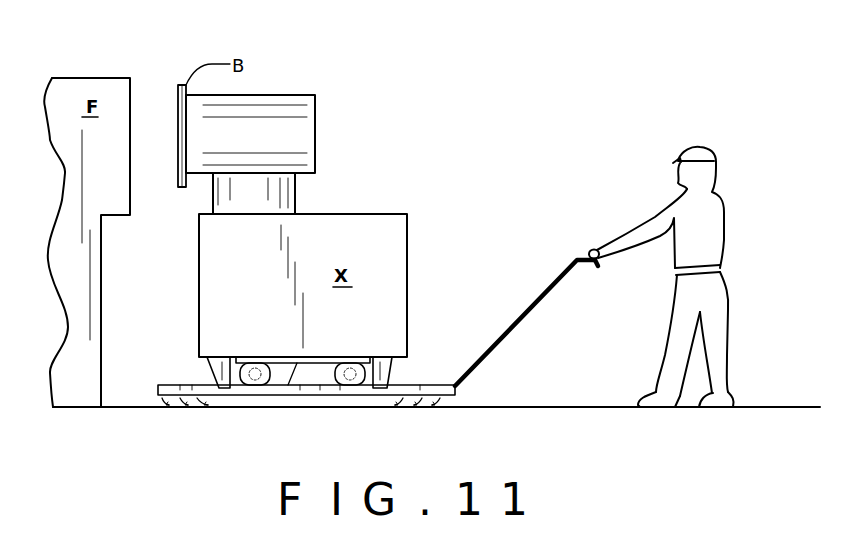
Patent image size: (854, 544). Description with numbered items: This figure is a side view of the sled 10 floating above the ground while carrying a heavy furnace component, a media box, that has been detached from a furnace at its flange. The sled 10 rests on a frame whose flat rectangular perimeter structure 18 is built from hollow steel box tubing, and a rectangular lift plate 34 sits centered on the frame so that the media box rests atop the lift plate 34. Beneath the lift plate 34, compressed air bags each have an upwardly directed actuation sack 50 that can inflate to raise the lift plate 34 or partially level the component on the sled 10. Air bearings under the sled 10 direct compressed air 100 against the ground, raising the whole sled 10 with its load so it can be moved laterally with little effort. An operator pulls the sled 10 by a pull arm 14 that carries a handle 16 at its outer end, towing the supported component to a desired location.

The sled 10 is at (387, 322).
The pull arm 14 is at (521, 319).
The handle 16 is at (592, 254).
The perimeter structure 18 is at (310, 393).
The lift plate 34 is at (288, 395).
The actuation sack 50 is at (255, 378).
The compressed air 100 is at (158, 400).